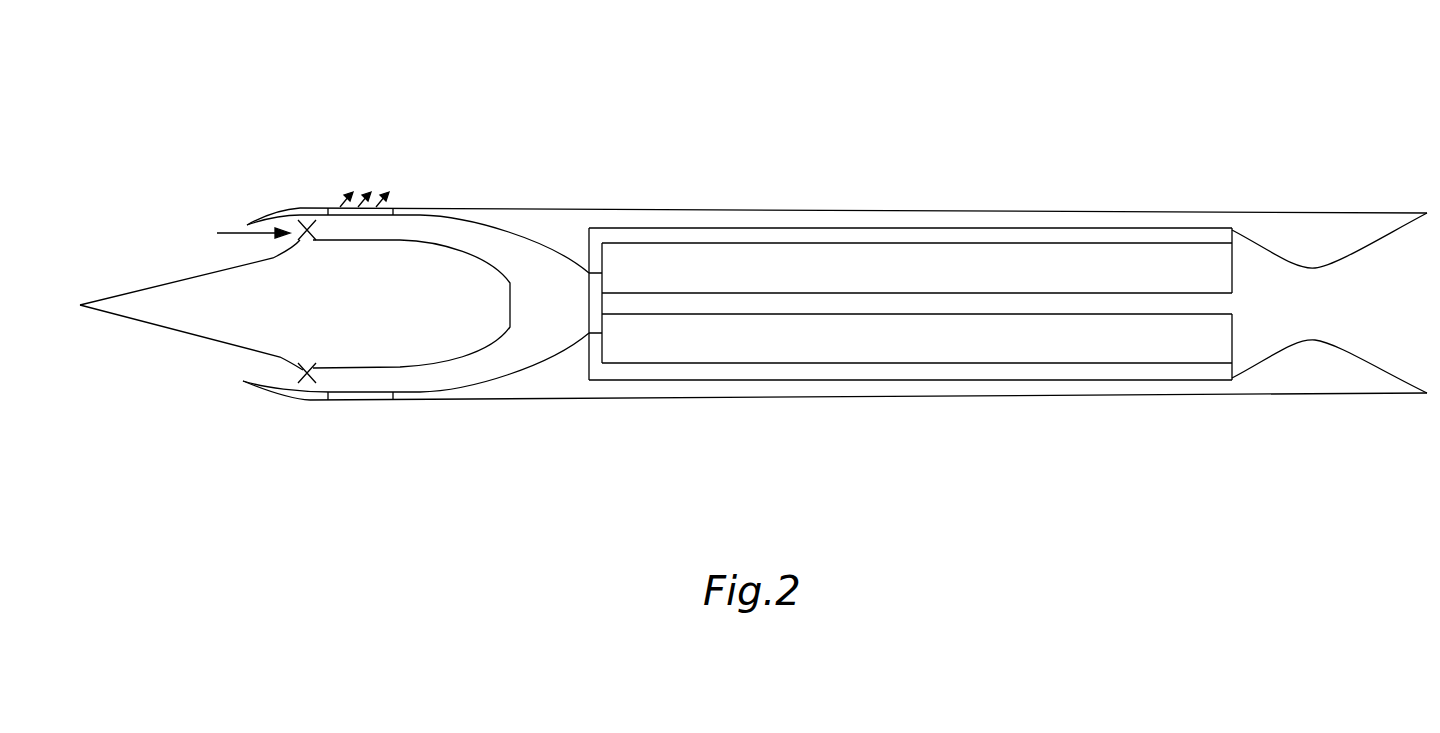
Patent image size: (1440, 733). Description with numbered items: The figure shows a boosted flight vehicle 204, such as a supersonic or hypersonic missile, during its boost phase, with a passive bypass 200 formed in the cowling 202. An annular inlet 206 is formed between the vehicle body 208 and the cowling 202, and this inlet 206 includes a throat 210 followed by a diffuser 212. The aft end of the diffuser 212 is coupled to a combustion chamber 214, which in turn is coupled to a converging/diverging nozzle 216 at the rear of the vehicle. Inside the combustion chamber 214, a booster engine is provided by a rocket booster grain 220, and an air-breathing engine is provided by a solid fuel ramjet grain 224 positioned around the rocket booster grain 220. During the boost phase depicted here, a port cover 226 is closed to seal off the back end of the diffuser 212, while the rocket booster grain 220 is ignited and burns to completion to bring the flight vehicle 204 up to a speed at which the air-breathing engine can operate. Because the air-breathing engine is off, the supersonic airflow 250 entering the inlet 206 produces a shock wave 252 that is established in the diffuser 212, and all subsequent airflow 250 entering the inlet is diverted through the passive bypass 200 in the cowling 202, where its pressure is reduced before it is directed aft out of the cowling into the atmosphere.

The passive bypass 200 is at (363, 217).
The cowling 202 is at (287, 212).
The boosted flight vehicle 204 is at (332, 103).
The annular inlet 206 is at (319, 380).
The vehicle body 208 is at (147, 322).
The throat 210 is at (270, 245).
The diffuser 212 is at (490, 237).
The combustion chamber 214 is at (913, 307).
The converging/diverging nozzle 216 is at (1313, 312).
The rocket booster grain 220 is at (837, 340).
The solid fuel ramjet grain 224 is at (1187, 237).
The port cover 226 is at (593, 323).
The airflow 250 is at (390, 175).
The shock wave 252 is at (310, 220).